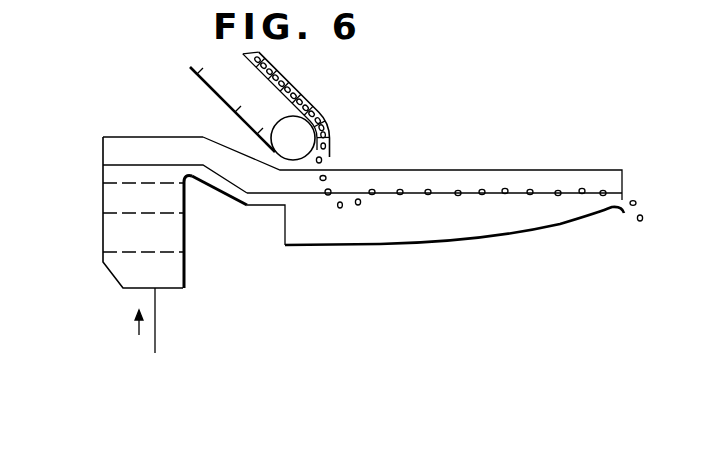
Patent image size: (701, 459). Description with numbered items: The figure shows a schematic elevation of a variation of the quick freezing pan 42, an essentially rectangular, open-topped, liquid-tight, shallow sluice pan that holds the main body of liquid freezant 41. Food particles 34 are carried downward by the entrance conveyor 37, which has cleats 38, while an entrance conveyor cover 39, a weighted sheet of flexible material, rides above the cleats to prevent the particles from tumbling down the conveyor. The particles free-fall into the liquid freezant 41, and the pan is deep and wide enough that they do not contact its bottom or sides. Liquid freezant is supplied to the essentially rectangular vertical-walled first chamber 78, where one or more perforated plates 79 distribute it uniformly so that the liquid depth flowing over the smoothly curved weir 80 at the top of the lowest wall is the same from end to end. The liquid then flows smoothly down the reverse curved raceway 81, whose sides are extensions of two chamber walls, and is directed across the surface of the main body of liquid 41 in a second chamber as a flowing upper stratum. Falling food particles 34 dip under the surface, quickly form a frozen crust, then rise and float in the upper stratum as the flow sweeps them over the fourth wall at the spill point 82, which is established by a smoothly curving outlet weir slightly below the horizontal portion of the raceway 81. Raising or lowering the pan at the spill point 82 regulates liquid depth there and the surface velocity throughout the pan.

The food particles 34 is at (328, 178).
The entrance conveyor 37 is at (257, 69).
The cleats 38 is at (218, 96).
The entrance conveyor cover 39 is at (328, 132).
The liquid freezant 41 is at (475, 207).
The quick freezing pan 42 is at (585, 170).
The first chamber 78 is at (187, 267).
The perforated plates 79 is at (160, 183).
The weir 80 is at (192, 178).
The raceway 81 is at (242, 205).
The spill point 82 is at (627, 198).